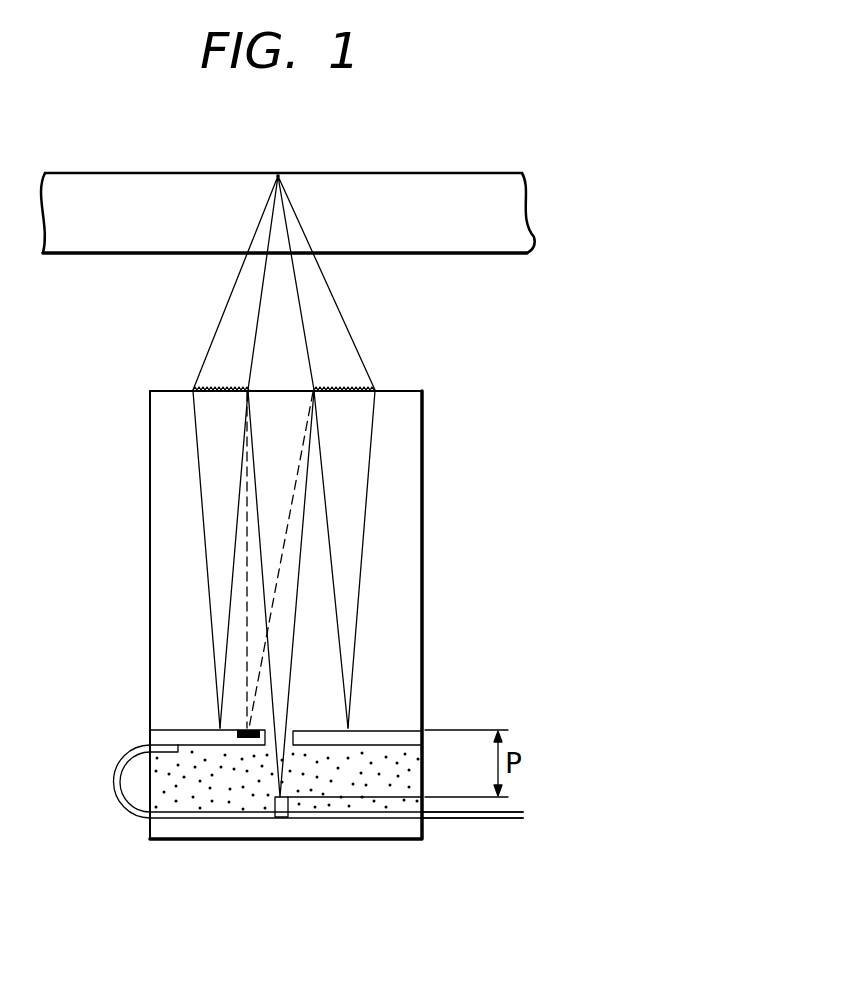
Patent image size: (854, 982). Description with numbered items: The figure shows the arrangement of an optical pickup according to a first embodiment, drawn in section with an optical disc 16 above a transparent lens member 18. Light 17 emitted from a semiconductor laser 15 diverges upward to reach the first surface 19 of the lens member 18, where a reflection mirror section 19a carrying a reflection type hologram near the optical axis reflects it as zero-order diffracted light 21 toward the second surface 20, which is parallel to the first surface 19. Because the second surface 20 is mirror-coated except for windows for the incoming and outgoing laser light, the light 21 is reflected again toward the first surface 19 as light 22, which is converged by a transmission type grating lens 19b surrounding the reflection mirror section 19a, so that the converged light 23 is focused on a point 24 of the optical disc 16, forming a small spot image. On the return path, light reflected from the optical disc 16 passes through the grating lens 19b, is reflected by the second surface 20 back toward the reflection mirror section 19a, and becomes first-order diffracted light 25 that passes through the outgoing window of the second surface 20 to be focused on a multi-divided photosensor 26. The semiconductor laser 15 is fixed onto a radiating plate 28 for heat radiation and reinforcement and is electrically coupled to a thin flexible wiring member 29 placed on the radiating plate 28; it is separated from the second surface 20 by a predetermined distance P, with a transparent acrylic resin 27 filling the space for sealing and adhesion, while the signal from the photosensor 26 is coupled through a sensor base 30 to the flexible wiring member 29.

The semiconductor laser 15 is at (282, 817).
The optical disc 16 is at (470, 190).
The emitted light 17 is at (272, 687).
The lens member 18 is at (395, 433).
The first surface 19 is at (405, 388).
The reflection mirror section 19a is at (296, 388).
The transmission type grating lens 19b is at (222, 388).
The second surface 20 is at (373, 727).
The light reflected toward second surface 21 is at (230, 610).
The light reflected toward first surface 22 is at (205, 543).
The converged light 23 is at (260, 307).
The focus point 24 is at (278, 174).
The first-order diffracted light 25 is at (247, 497).
The multi-divided photosensor 26 is at (247, 745).
The acrylic resin 27 is at (172, 780).
The radiating plate 28 is at (366, 826).
The flexible wiring member 29 is at (452, 820).
The sensor base 30 is at (408, 738).